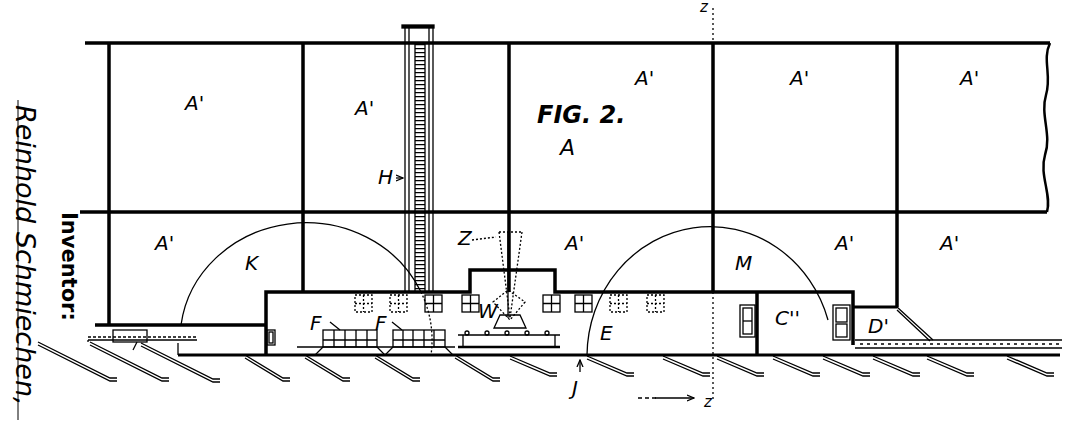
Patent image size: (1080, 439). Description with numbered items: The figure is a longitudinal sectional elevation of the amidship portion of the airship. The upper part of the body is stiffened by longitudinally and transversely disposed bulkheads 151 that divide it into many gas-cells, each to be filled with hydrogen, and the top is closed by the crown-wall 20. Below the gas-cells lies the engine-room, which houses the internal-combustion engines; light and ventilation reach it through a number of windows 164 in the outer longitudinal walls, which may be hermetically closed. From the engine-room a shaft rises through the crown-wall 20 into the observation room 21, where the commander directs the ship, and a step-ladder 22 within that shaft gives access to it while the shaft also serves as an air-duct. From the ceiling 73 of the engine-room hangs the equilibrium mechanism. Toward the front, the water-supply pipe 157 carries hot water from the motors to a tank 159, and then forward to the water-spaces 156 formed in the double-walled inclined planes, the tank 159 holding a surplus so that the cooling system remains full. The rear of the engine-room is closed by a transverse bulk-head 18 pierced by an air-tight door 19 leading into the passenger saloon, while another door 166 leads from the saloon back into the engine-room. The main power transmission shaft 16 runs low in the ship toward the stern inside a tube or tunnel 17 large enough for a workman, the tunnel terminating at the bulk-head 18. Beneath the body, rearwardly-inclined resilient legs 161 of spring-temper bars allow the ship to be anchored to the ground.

The main power transmission shaft 16 is at (927, 351).
The tube or tunnel 17 is at (958, 337).
The transverse bulk-head 18 is at (855, 300).
The door 19 is at (831, 320).
The crown-wall 20 is at (485, 41).
The observation room 21 is at (401, 31).
The step-ladder 22 is at (434, 137).
The ceiling 73 is at (666, 292).
The bulkheads 151 is at (565, 184).
The water-spaces 156 is at (65, 361).
The water-supply pipe 157 is at (511, 195).
The tank 159 is at (136, 323).
The resilient legs 161 is at (424, 380).
The windows 164 is at (398, 294).
The door 166 is at (738, 322).